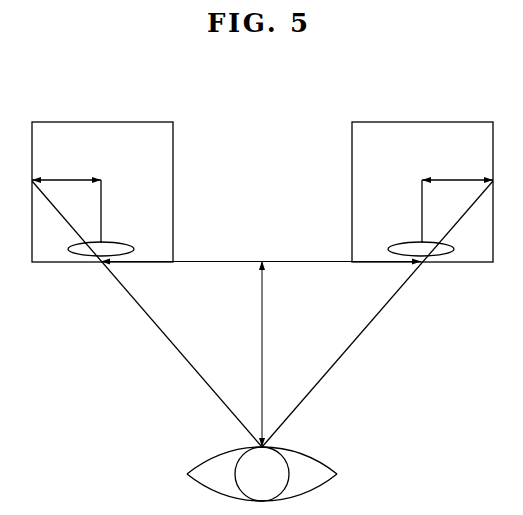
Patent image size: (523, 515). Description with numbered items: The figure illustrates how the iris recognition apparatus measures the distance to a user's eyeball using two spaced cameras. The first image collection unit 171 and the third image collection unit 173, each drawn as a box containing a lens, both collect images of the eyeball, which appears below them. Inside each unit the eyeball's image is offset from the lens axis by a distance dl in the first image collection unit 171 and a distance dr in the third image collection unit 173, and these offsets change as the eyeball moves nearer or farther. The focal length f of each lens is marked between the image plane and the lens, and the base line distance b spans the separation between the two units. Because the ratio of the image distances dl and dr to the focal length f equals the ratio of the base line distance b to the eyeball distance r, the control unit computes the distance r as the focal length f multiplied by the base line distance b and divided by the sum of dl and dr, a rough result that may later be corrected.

The first image collection unit 171 is at (100, 121).
The third image collection unit 173 is at (423, 121).
The distance of the eyeball in the image collected by the first image collection uni dl is at (66, 171).
The distance of the eyeball in the image collected by the third image collection uni dr is at (457, 171).
The focal length of lens f is at (261, 211).
The base line distance b is at (261, 251).
The distance between the iris recognition apparatus and the eyeball r is at (268, 354).